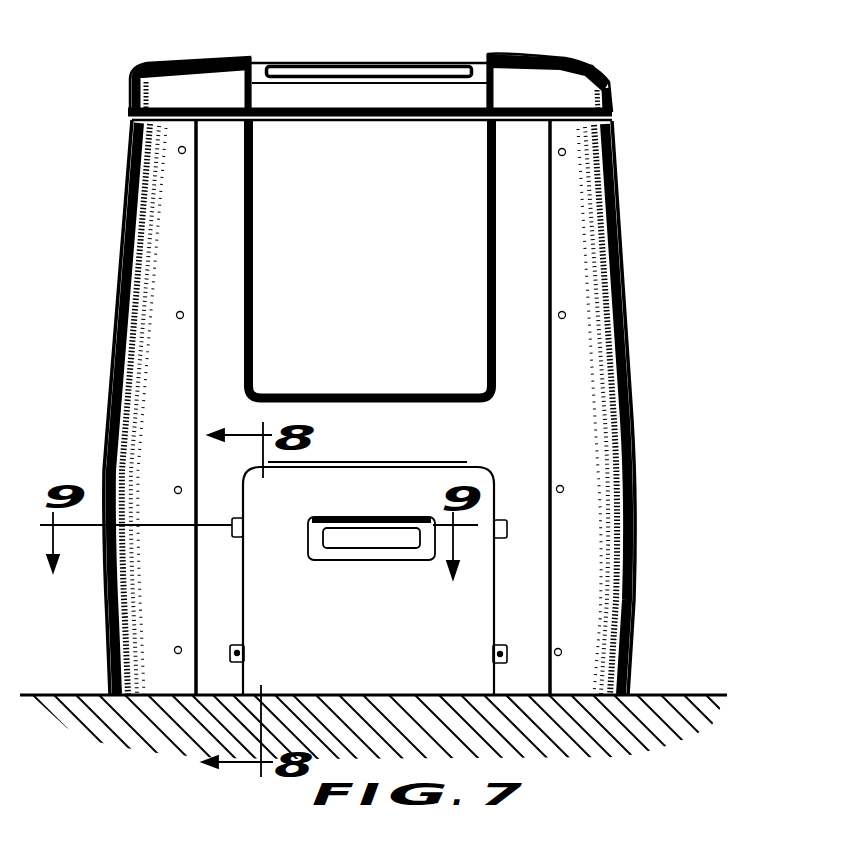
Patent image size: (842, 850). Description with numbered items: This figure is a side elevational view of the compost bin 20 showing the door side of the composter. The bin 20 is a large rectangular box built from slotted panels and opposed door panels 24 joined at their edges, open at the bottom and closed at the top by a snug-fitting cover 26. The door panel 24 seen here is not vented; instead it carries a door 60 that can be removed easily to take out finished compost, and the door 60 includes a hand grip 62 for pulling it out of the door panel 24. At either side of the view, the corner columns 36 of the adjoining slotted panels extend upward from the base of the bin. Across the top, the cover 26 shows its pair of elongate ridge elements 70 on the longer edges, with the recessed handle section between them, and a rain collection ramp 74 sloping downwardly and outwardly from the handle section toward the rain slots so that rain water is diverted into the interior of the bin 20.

The compost bin 20 is at (652, 271).
The door panel 24 is at (376, 249).
The cover 26 is at (376, 68).
The corner column 36 is at (120, 295).
The door 60 is at (368, 578).
The hand grip 62 is at (400, 516).
The ridge element 70 is at (182, 56).
The rain collection ramp 74 is at (333, 68).